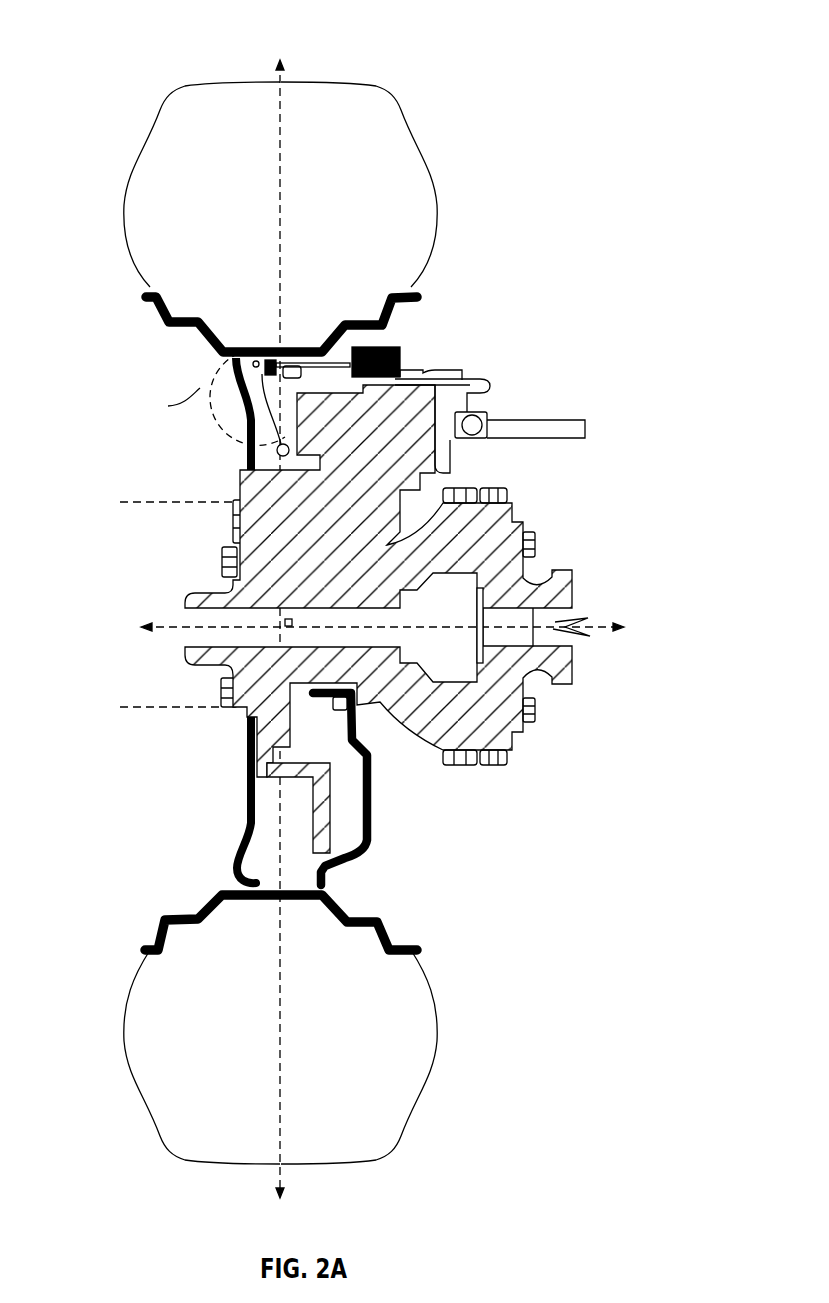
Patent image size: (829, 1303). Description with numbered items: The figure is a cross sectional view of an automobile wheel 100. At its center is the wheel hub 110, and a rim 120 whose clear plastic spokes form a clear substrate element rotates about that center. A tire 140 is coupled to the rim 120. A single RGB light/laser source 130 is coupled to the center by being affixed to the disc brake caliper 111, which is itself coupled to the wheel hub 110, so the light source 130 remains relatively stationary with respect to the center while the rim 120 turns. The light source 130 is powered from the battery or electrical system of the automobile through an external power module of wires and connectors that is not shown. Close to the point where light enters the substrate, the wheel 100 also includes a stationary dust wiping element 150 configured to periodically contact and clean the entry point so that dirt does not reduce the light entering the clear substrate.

The wheel 100 is at (606, 62).
The wheel hub 110 is at (120, 502).
The disc brake caliper 111 is at (420, 378).
The rim 120 is at (247, 475).
The light source 130 is at (395, 348).
The tire 140 is at (141, 150).
The dust wiping element 150 is at (266, 360).